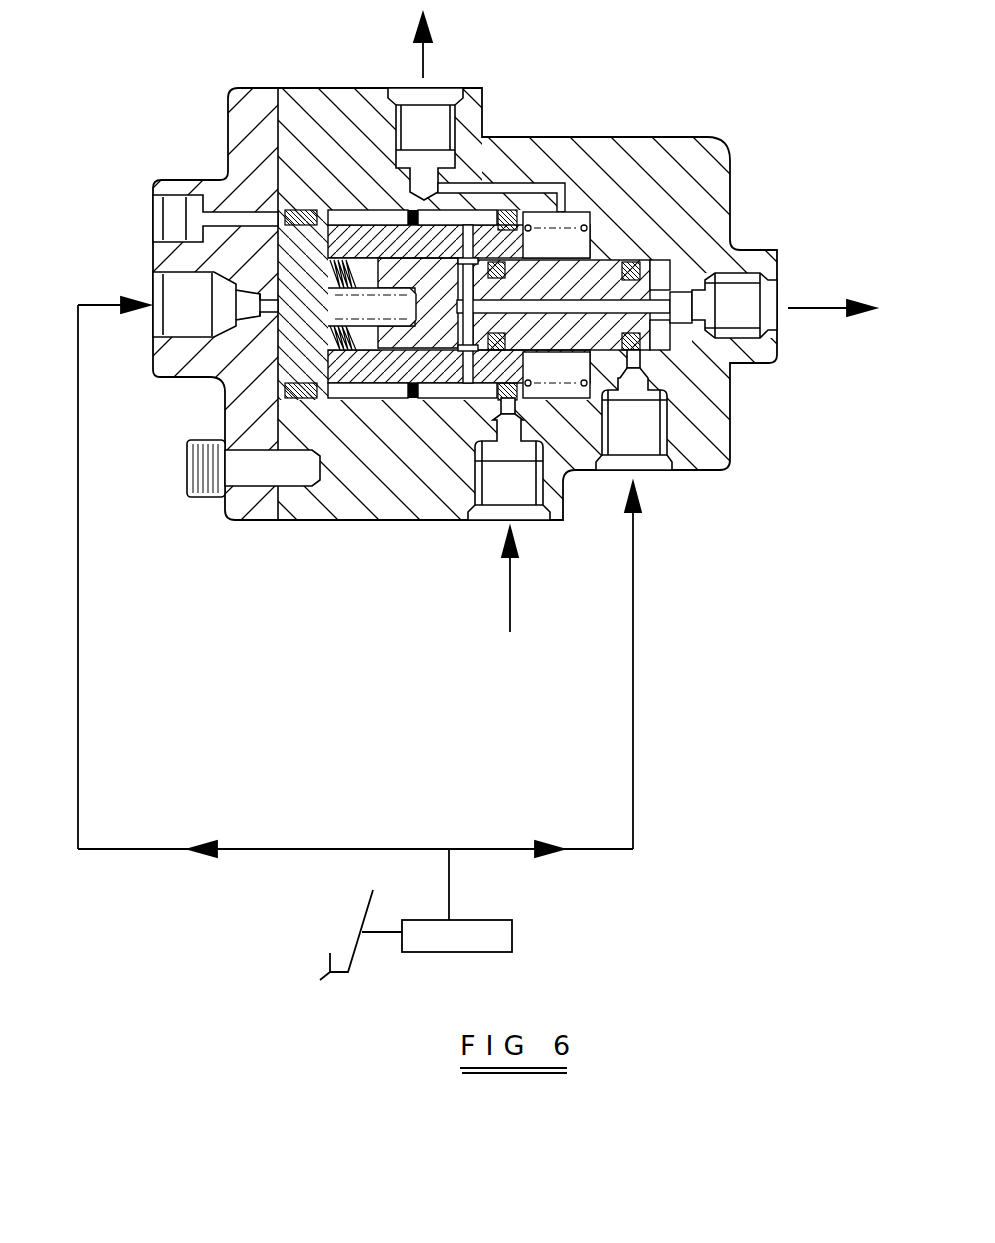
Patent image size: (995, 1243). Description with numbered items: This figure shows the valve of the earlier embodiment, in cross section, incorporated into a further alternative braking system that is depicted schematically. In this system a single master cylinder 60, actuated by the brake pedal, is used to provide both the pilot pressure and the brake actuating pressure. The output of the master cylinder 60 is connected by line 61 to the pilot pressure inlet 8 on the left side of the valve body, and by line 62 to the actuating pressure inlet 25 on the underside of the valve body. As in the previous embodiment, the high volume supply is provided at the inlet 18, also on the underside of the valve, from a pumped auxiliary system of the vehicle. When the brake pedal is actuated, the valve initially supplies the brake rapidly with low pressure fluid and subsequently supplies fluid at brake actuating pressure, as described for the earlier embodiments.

The pilot pressure inlet 8 is at (185, 295).
The high volume supply inlet 18 is at (502, 480).
The actuating pressure inlet 25 is at (640, 430).
The master cylinder 60 is at (512, 932).
The line 61 is at (329, 849).
The line 62 is at (633, 617).